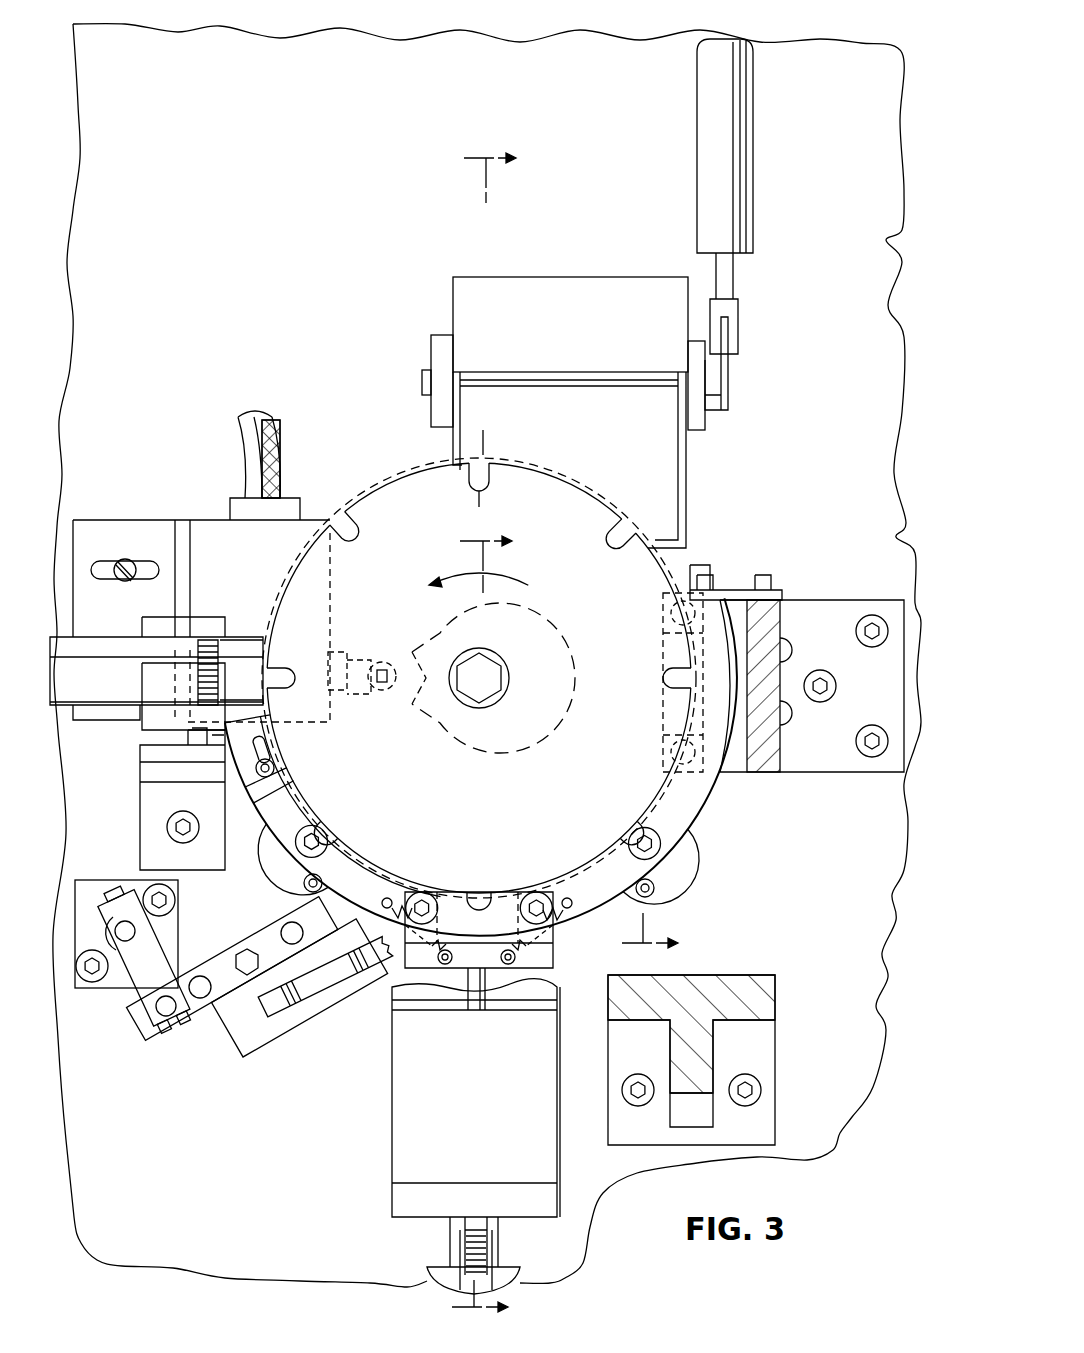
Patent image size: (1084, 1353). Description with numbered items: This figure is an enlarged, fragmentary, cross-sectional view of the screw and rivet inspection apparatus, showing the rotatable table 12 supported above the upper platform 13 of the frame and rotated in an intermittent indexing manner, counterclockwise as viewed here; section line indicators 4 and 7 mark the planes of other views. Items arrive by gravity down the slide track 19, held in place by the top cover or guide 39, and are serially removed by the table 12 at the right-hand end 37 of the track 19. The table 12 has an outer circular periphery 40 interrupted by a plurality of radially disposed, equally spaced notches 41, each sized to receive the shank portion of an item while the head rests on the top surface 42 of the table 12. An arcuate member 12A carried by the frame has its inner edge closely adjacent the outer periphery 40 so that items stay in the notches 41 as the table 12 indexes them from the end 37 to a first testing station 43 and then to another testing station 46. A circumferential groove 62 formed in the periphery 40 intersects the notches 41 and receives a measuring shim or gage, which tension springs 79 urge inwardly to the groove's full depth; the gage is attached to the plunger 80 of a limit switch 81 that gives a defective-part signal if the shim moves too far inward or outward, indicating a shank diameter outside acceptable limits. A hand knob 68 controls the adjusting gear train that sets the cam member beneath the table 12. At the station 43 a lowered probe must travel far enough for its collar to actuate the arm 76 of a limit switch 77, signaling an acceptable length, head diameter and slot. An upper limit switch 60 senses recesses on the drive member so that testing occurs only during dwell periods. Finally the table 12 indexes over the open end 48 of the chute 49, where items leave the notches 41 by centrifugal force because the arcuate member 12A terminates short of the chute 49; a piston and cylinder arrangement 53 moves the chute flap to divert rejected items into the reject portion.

The section line 4- 4 is at (491, 925).
The section line 7- 7 is at (581, 549).
The rotatable table 12 is at (366, 486).
The arcuate member 12A is at (688, 805).
The upper platform 13 is at (833, 1125).
The slide track 19 is at (115, 640).
The right-hand end of the track 37 is at (272, 650).
The top cover or guide 39 is at (110, 708).
The outer circular periphery 40 is at (376, 496).
The notches 41 is at (490, 461).
The top surface 42 is at (346, 496).
The first testing station 43 is at (472, 870).
The testing station 46 is at (510, 663).
The open end of the chute 48 is at (655, 490).
The chute 49 is at (690, 450).
The piston and cylinder arrangement 53 is at (738, 187).
The upper limit switch 60 is at (210, 530).
The circumferential groove 62 is at (568, 480).
The hand knob 68 is at (447, 1273).
The switch arm 76 is at (355, 958).
The limit switch 77 is at (242, 1035).
The tension springs 79 is at (402, 887).
The plunger 80 is at (522, 978).
The limit switch 81 is at (402, 1077).